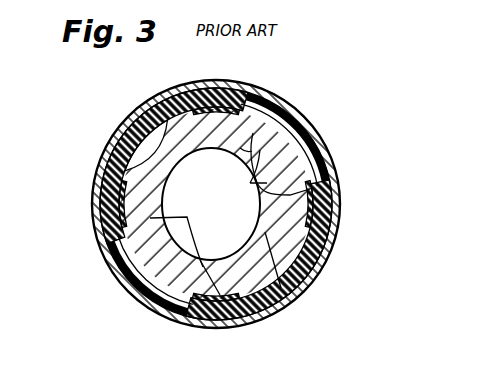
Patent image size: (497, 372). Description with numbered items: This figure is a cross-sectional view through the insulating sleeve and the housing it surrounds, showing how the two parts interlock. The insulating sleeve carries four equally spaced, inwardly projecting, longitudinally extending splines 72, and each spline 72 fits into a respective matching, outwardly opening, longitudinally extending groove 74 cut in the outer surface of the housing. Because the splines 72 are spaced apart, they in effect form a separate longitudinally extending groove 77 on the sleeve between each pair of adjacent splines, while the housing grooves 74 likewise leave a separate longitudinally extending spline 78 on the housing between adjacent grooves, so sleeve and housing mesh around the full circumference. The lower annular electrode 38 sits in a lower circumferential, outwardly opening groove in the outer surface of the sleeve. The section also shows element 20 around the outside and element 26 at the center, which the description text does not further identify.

The outer ring 20 is at (297, 118).
The central bore 26 is at (180, 170).
The lower annular electrode 38 is at (115, 188).
The splines 72 is at (231, 214).
The grooves 74 is at (130, 128).
The groove 77 is at (180, 84).
The spline 78 is at (270, 88).